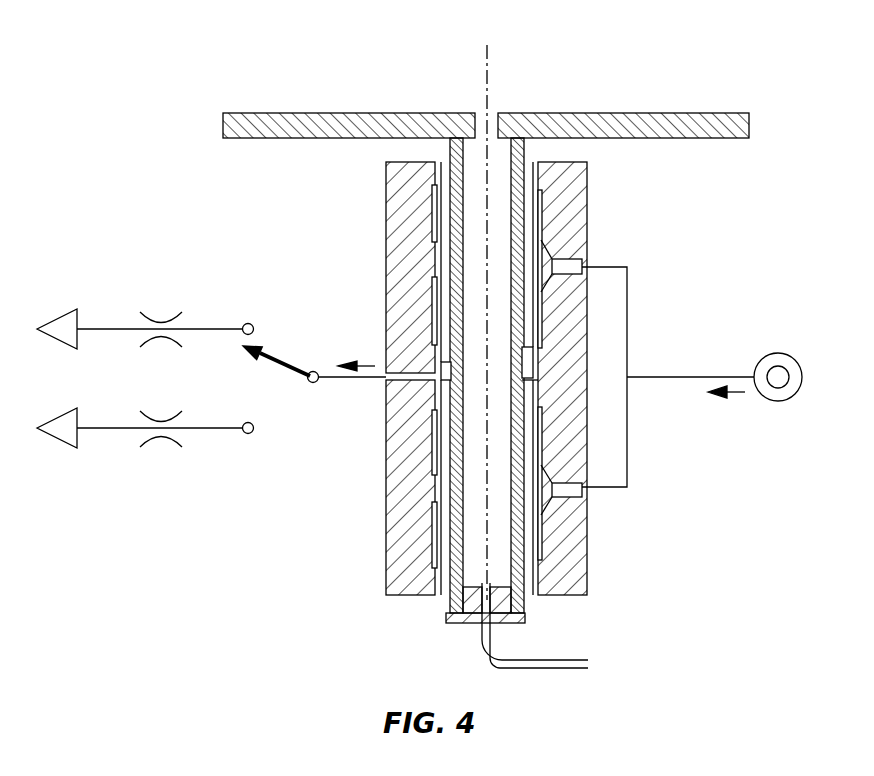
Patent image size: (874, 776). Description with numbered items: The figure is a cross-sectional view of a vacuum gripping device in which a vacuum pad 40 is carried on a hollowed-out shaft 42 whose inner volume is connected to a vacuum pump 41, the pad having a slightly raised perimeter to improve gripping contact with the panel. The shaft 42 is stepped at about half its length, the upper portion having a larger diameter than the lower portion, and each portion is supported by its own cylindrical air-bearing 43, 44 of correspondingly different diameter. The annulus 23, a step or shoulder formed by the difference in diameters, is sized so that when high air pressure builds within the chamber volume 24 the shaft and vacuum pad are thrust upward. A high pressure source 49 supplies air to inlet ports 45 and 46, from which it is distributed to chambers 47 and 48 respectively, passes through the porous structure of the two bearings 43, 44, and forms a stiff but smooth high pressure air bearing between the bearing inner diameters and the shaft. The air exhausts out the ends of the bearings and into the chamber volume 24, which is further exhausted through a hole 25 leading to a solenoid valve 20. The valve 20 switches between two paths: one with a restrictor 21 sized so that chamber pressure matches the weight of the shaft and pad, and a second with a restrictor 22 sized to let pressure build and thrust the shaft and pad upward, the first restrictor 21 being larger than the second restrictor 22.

The solenoid valve 20 is at (285, 360).
The first restrictor 21 is at (159, 315).
The second restrictor 22 is at (158, 412).
The annulus 23 is at (523, 352).
The chamber volume 24 is at (527, 378).
The hole 25 is at (378, 385).
The vacuum pad 40 is at (647, 112).
The vacuum pump 41 is at (575, 661).
The shaft 42 is at (524, 160).
The cylindrical air-bearing 43 is at (442, 173).
The cylindrical air-bearing 44 is at (444, 577).
The inlet port 45 is at (584, 490).
The inlet port 46 is at (586, 265).
The chamber 47 is at (432, 213).
The chamber 48 is at (432, 475).
The high pressure source 49 is at (785, 356).